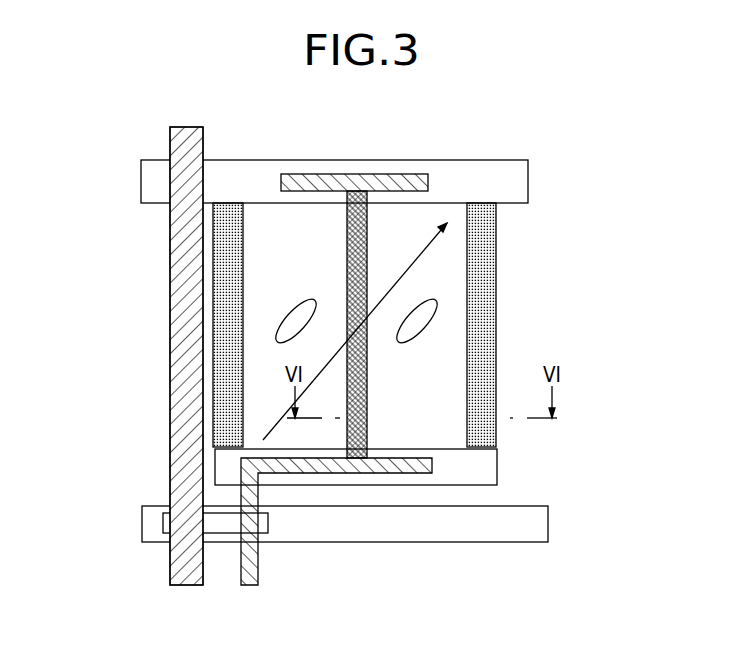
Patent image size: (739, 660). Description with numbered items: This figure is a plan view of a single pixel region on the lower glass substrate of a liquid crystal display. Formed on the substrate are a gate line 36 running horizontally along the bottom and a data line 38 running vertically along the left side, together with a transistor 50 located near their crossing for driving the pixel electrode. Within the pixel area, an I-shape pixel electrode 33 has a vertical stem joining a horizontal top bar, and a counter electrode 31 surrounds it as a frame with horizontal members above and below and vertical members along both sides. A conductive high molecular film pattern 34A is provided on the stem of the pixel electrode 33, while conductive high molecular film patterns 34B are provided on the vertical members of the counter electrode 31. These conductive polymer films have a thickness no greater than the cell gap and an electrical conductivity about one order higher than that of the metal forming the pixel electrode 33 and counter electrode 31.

The counter electrode 31 is at (497, 465).
The I-shape pixel electrode 33 is at (378, 174).
The conductive high molecular film pattern 34A is at (367, 237).
The conductive high molecular film pattern 34B is at (222, 282).
The gate line 36 is at (548, 523).
The data line 38 is at (172, 347).
The transistor 50 is at (222, 543).